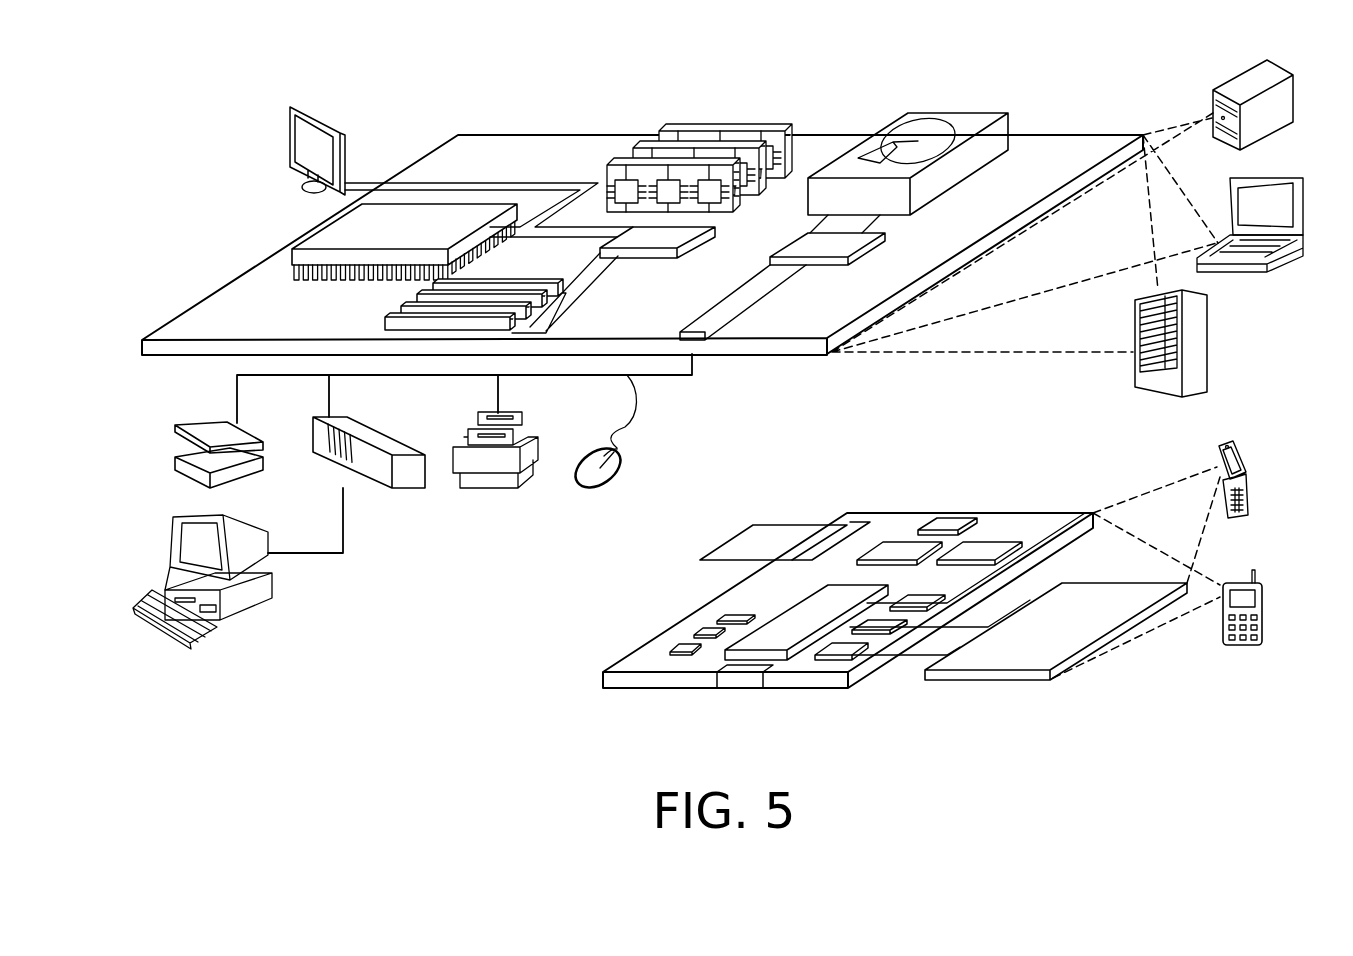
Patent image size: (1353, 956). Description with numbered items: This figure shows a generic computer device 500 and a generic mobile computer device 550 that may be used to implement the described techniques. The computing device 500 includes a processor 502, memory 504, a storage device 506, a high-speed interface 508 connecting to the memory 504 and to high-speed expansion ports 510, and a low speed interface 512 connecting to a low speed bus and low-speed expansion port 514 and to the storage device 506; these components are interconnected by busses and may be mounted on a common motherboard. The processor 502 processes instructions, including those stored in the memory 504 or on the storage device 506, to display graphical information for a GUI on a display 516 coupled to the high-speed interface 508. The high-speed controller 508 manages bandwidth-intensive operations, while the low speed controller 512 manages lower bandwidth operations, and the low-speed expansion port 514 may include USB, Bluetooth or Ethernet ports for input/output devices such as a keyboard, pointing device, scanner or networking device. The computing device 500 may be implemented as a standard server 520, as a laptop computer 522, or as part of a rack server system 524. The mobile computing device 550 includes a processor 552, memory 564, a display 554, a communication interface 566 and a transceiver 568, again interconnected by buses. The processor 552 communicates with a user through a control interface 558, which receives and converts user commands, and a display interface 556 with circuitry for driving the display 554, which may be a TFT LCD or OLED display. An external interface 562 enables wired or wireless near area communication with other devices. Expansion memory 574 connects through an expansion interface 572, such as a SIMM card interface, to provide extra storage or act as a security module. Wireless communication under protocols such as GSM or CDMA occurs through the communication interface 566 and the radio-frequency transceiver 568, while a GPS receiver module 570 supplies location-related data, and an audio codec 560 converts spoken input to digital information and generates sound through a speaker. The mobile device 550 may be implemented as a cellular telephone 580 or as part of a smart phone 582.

The computing device 500 is at (412, 88).
The processor 502 is at (315, 234).
The memory 504 is at (733, 128).
The storage device 506 is at (948, 113).
The high-speed interface 508 is at (670, 235).
The high-speed expansion ports 510 is at (407, 305).
The low speed interface 512 is at (802, 242).
The low-speed expansion port 514 is at (698, 325).
The display 516 is at (291, 108).
The standard server 520 is at (1233, 85).
The laptop computer 522 is at (1282, 178).
The rack server system 524 is at (1208, 342).
The mobile computer device 550 is at (562, 695).
The processor 552 is at (778, 627).
The display 554 is at (1094, 597).
The display interface 556 is at (848, 647).
The control interface 558 is at (887, 623).
The audio codec 560 is at (922, 598).
The external interface 562 is at (741, 676).
The memory 564 is at (700, 630).
The communication interface 566 is at (902, 545).
The transceiver 568 is at (983, 547).
The GPS receiver module 570 is at (948, 522).
The expansion interface 572 is at (829, 526).
The expansion memory 574 is at (754, 526).
The cellular telephone 580 is at (1228, 442).
The smart phone 582 is at (1240, 583).